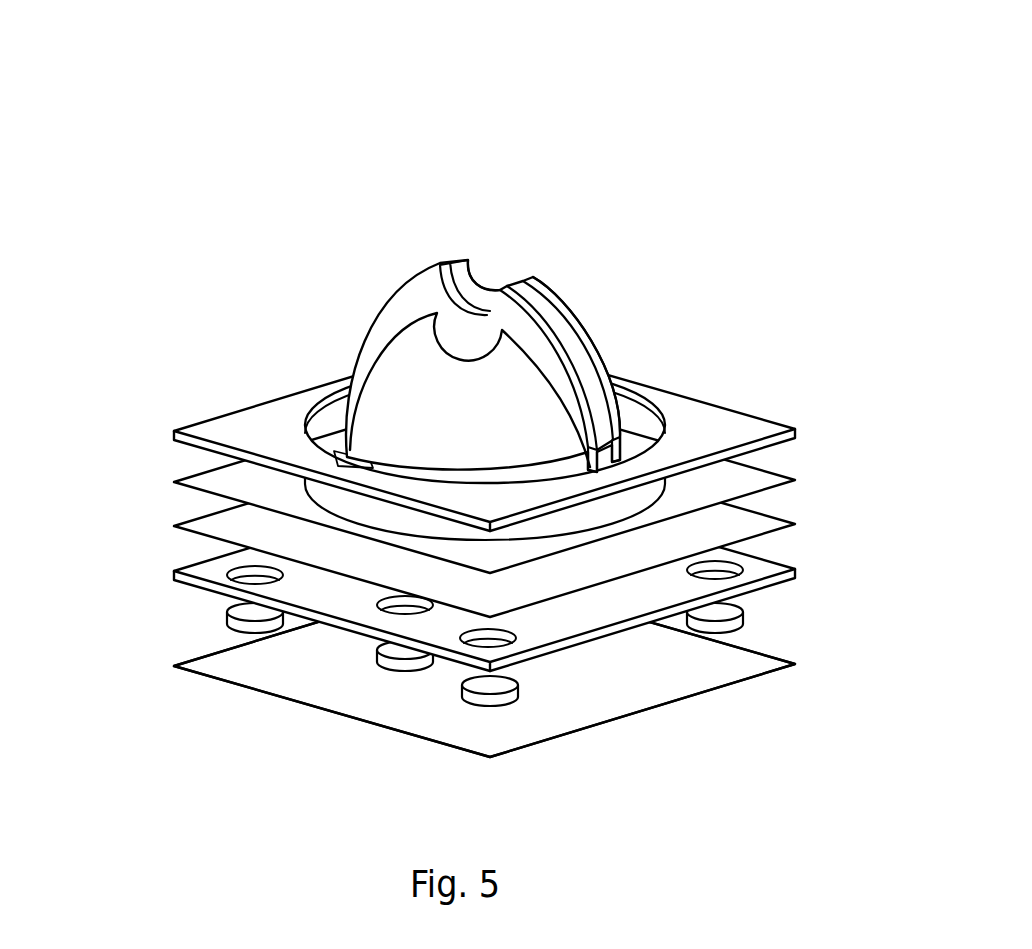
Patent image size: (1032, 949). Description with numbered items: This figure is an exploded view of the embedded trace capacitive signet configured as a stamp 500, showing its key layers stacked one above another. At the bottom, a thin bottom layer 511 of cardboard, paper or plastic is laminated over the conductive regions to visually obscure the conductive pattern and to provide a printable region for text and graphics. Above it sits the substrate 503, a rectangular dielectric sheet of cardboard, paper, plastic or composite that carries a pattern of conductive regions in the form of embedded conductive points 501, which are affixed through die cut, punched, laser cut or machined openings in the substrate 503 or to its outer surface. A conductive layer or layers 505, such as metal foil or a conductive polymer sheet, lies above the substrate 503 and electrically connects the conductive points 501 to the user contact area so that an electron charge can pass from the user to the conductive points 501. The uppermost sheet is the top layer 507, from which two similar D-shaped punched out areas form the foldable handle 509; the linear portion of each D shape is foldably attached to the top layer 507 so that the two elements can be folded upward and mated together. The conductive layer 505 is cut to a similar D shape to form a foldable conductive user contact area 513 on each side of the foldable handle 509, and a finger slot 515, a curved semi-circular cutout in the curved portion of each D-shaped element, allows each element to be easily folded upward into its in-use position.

The stamp 500 is at (275, 134).
The embedded conductive points 501 is at (708, 636).
The substrate 503 is at (780, 567).
The conductive layer 505 is at (183, 525).
The top layer 507 is at (780, 425).
The foldable handle 509 is at (583, 337).
The bottom layer 511 is at (200, 663).
The foldable conductive user contact area 513 is at (415, 343).
The finger slot 515 is at (473, 283).